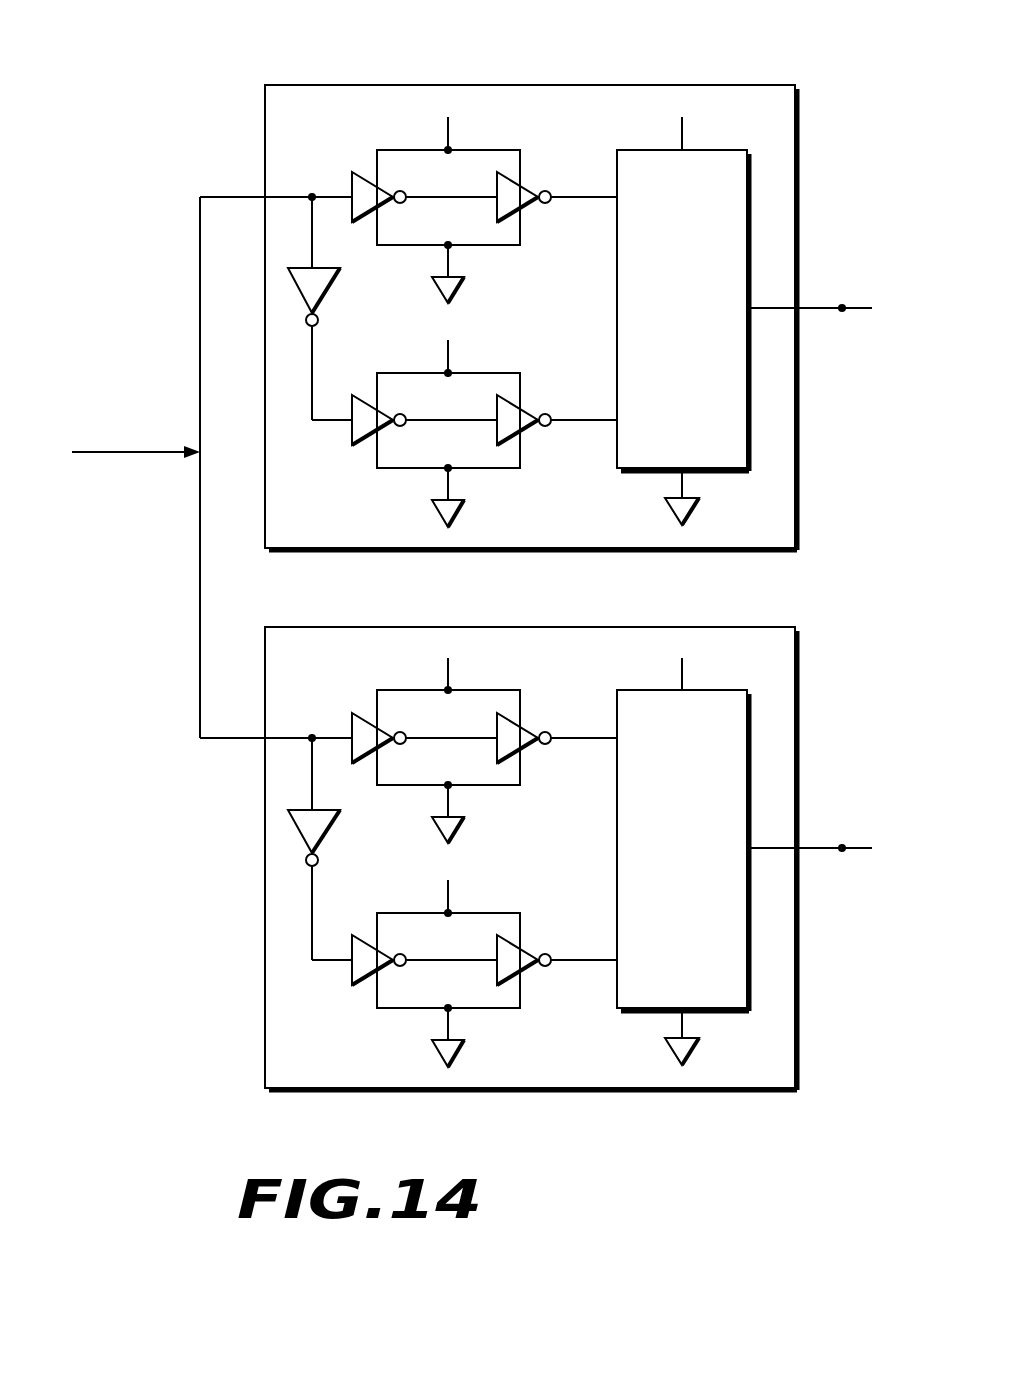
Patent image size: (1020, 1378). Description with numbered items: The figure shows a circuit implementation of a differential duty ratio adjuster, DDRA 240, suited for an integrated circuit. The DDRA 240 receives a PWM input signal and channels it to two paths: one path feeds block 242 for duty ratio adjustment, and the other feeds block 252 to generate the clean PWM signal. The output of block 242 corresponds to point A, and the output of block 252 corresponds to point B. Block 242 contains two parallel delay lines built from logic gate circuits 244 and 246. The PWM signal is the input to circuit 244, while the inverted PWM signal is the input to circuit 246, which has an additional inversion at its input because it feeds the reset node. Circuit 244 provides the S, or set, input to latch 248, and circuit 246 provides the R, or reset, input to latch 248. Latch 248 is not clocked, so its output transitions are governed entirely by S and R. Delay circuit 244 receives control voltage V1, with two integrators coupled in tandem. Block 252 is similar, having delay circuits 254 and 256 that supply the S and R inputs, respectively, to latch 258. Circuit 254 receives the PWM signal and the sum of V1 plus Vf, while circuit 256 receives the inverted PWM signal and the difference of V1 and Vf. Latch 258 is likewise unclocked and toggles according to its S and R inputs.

The DDRA 240 is at (142, 78).
The block 242 is at (730, 85).
The delay circuit 244 is at (410, 126).
The delay circuit 246 is at (410, 350).
The latch 248 is at (680, 372).
The block 252 is at (730, 627).
The delay circuit 254 is at (410, 666).
The delay circuit 256 is at (410, 890).
The latch 258 is at (680, 912).